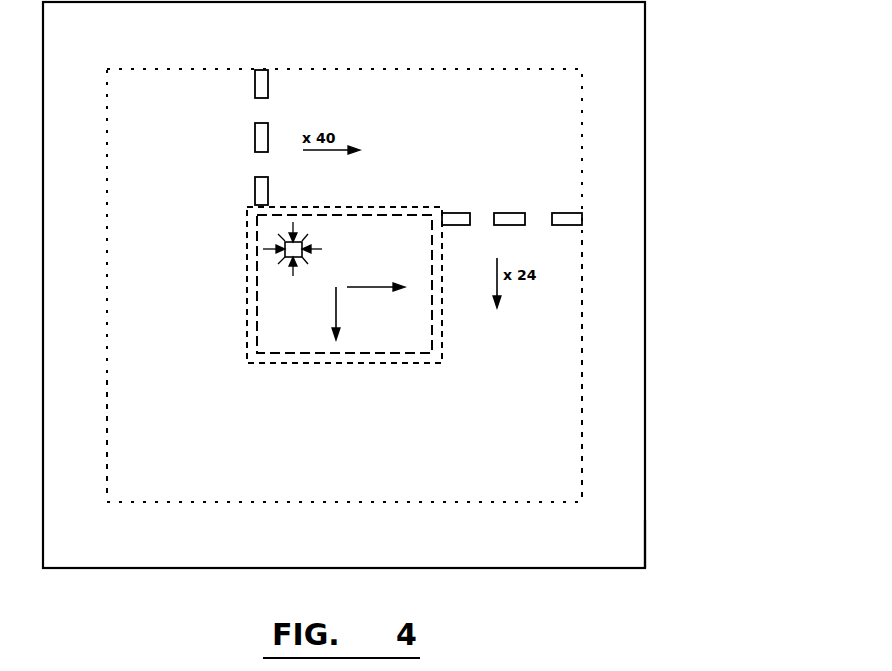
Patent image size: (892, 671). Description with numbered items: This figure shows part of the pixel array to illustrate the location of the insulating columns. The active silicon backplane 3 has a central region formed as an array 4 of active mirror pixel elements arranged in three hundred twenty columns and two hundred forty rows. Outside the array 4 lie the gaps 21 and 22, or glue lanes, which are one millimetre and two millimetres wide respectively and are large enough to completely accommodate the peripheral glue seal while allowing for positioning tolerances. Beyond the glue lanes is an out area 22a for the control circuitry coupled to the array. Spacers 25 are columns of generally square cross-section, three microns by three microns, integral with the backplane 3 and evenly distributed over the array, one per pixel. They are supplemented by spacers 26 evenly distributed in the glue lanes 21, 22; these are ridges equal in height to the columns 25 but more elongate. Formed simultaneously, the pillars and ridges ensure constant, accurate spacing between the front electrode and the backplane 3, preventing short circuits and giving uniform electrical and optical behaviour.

The active silicon backplane 3 is at (660, 279).
The array of active mirror pixel elements 4 is at (411, 257).
The gaps 21 is at (182, 381).
The gaps 22 is at (450, 157).
The out area 22a is at (600, 530).
The spacers 25 is at (283, 257).
The spacers 26 is at (267, 132).